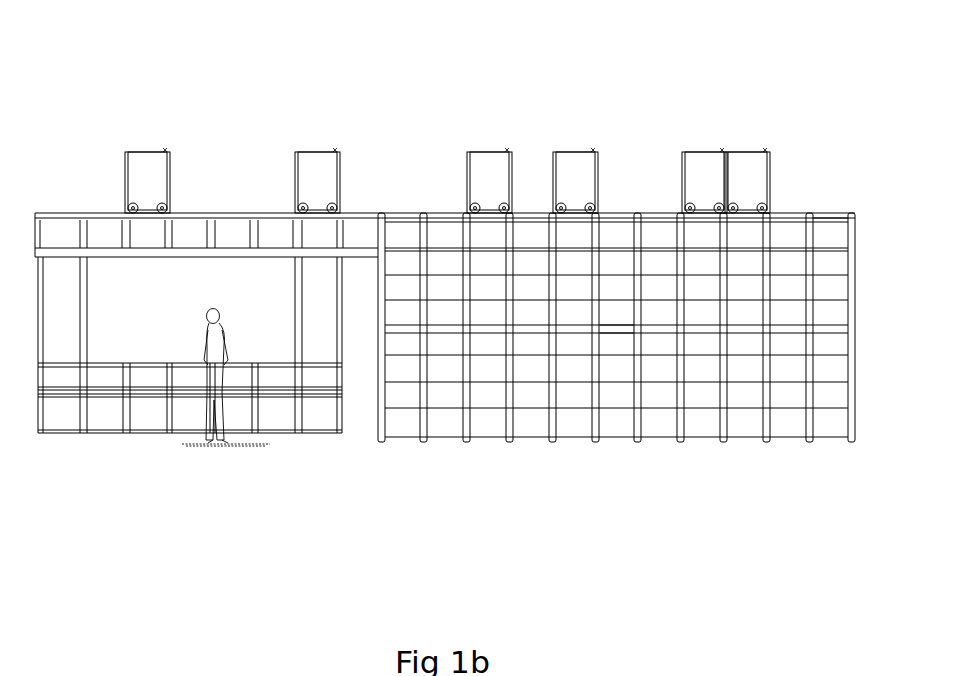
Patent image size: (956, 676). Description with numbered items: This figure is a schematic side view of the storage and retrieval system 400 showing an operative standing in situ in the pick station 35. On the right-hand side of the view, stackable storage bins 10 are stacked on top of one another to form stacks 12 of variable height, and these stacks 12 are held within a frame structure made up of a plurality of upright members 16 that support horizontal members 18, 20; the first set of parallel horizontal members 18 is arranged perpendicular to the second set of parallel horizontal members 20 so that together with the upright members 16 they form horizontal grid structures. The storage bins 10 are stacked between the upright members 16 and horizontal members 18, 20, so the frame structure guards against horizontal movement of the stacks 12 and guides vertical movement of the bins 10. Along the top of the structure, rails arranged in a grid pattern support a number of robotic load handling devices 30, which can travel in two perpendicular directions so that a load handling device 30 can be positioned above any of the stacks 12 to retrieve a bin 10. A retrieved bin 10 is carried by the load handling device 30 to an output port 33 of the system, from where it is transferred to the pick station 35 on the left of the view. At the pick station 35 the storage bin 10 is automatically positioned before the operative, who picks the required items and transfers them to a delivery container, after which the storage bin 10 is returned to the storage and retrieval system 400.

The storage bin 10 is at (837, 415).
The stack 12 is at (450, 423).
The upright member 16 is at (723, 393).
The horizontal member 18 is at (618, 322).
The horizontal member 20 is at (41, 230).
The robotic load handling device 30 is at (572, 162).
The output port 33 is at (62, 230).
The pick station 35 is at (138, 445).
The storage and retrieval system 400 is at (800, 190).